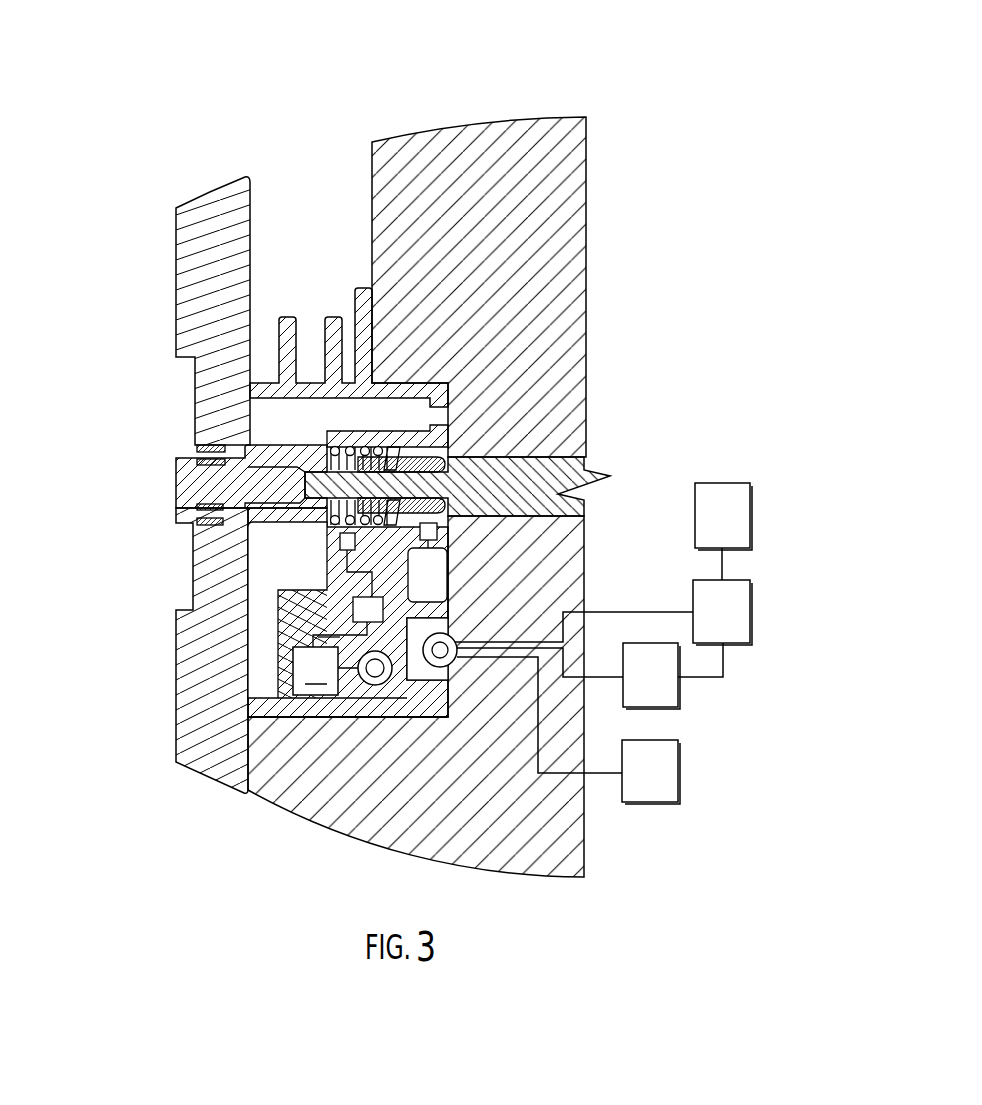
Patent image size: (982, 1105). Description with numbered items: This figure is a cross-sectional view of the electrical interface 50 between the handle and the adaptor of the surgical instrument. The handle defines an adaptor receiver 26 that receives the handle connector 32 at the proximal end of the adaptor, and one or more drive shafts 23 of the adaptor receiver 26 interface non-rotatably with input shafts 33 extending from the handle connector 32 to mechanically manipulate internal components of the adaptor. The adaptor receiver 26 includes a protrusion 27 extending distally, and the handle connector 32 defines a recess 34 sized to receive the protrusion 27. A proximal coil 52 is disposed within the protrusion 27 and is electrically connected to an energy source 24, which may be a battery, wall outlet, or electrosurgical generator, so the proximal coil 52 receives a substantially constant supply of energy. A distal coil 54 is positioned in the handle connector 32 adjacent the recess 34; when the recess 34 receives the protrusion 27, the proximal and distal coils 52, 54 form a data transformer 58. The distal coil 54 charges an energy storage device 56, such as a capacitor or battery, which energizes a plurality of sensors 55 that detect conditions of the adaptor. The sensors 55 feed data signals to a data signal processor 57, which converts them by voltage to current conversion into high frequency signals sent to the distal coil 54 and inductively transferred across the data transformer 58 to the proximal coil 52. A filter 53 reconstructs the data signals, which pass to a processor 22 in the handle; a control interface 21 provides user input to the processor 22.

The control interface 21 is at (711, 529).
The processor 22 is at (711, 626).
The drive shafts 23 is at (531, 474).
The energy source 24 is at (639, 786).
The adaptor receiver 26 is at (548, 116).
The protrusion 27 is at (440, 630).
The handle connector 32 is at (213, 188).
The input shafts 33 is at (238, 487).
The recess 34 is at (318, 637).
The electrical interface 50 is at (90, 663).
The proximal coil 52 is at (455, 641).
The filter 53 is at (639, 690).
The distal coil 54 is at (370, 686).
The plurality of sensors 55 is at (420, 538).
The energy storage device 56 is at (330, 658).
The data signal processor 57 is at (352, 612).
The data transformer 58 is at (410, 704).